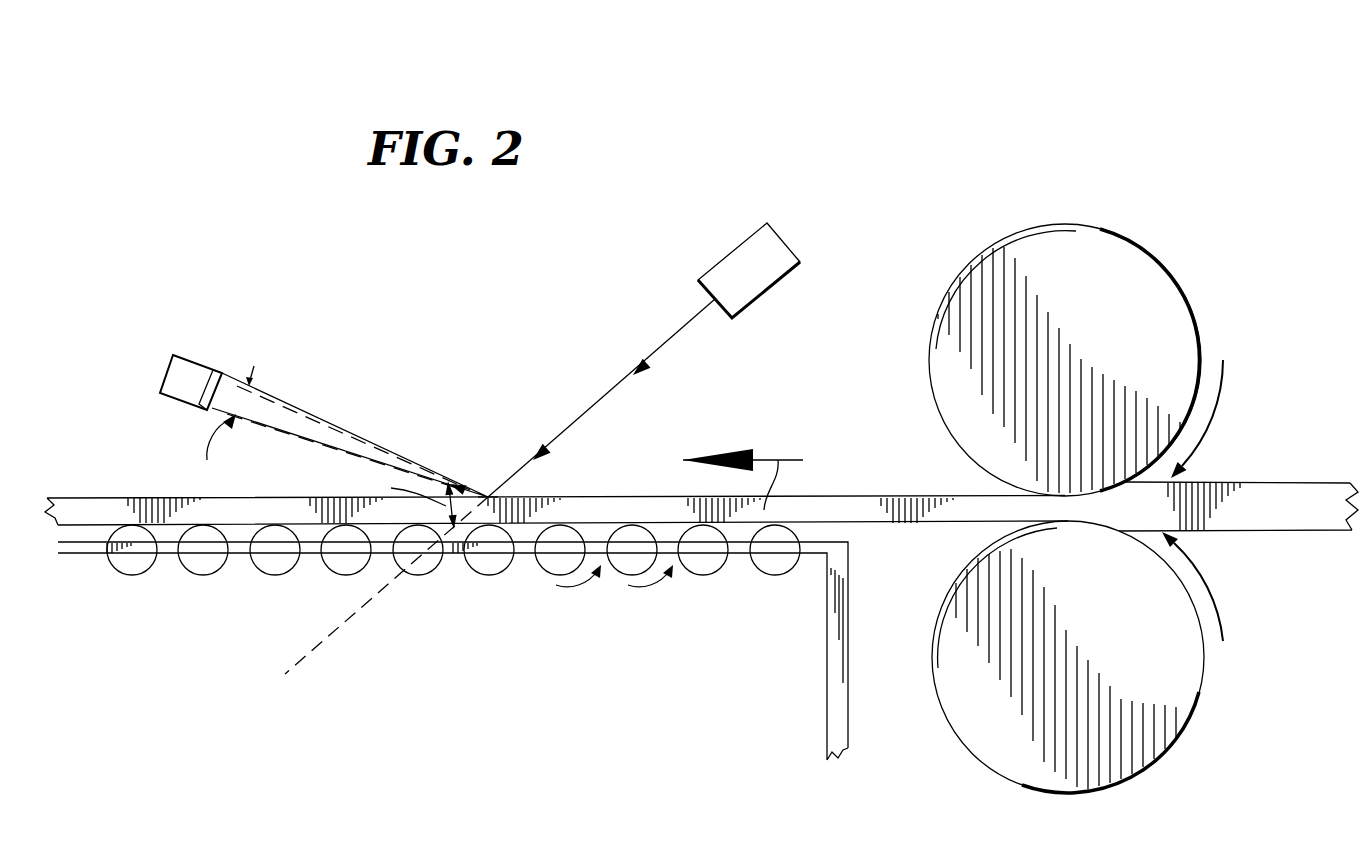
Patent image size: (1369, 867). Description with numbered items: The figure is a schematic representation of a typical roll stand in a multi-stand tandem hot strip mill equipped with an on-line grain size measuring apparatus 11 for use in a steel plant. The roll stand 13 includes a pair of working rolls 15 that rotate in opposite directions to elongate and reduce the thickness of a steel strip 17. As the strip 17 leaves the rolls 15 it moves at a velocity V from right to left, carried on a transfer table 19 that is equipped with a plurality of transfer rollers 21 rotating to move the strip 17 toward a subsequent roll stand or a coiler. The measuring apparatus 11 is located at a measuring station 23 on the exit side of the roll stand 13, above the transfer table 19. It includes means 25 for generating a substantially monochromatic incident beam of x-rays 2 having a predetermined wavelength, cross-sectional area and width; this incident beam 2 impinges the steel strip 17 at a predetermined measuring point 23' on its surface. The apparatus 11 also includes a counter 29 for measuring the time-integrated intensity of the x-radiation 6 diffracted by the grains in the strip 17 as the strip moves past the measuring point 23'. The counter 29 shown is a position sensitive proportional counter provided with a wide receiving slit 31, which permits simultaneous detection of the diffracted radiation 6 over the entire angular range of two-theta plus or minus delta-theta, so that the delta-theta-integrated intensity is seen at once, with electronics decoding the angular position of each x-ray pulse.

The incident beam of x-rays 2 is at (580, 421).
The diffracted x-radiation 6 is at (372, 445).
The grain size measuring apparatus 11 is at (150, 312).
The roll stand 13 is at (1168, 240).
The working rolls 15 is at (1199, 323).
The steel strip 17 is at (849, 508).
The transfer table 19 is at (830, 618).
The transfer rollers 21 is at (544, 571).
The measuring station 23 is at (739, 258).
The measuring point 23' is at (478, 472).
The means for generating incident x-ray beam 25 is at (773, 246).
The counter 29 is at (177, 374).
The receiving slit 31 is at (223, 377).